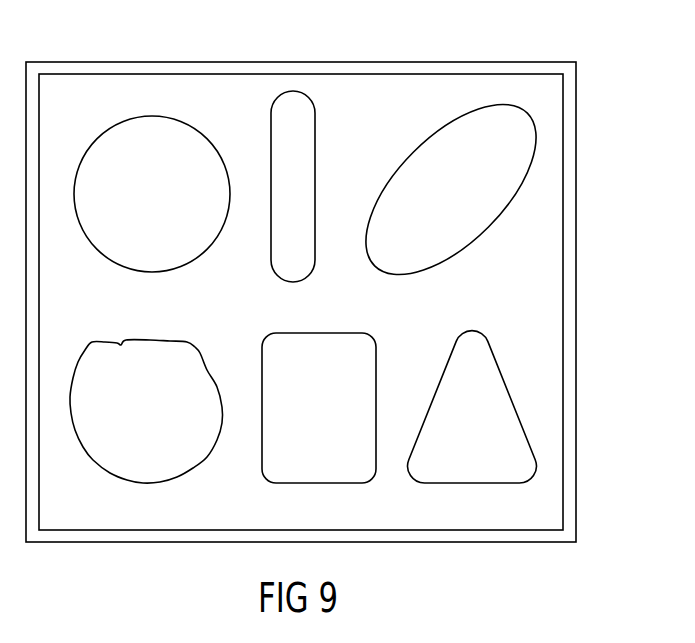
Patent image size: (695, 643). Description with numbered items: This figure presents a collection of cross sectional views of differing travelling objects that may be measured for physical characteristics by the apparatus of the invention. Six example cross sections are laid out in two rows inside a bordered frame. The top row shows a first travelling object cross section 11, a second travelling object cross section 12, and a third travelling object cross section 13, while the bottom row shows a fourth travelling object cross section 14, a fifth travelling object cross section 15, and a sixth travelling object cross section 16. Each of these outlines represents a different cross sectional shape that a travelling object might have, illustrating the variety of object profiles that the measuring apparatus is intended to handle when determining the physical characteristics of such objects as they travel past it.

The travelling object cross section 11 is at (152, 213).
The travelling object cross section 12 is at (274, 201).
The travelling object cross section 13 is at (451, 193).
The travelling object cross section 14 is at (146, 428).
The travelling object cross section 15 is at (305, 426).
The travelling object cross section 16 is at (471, 425).